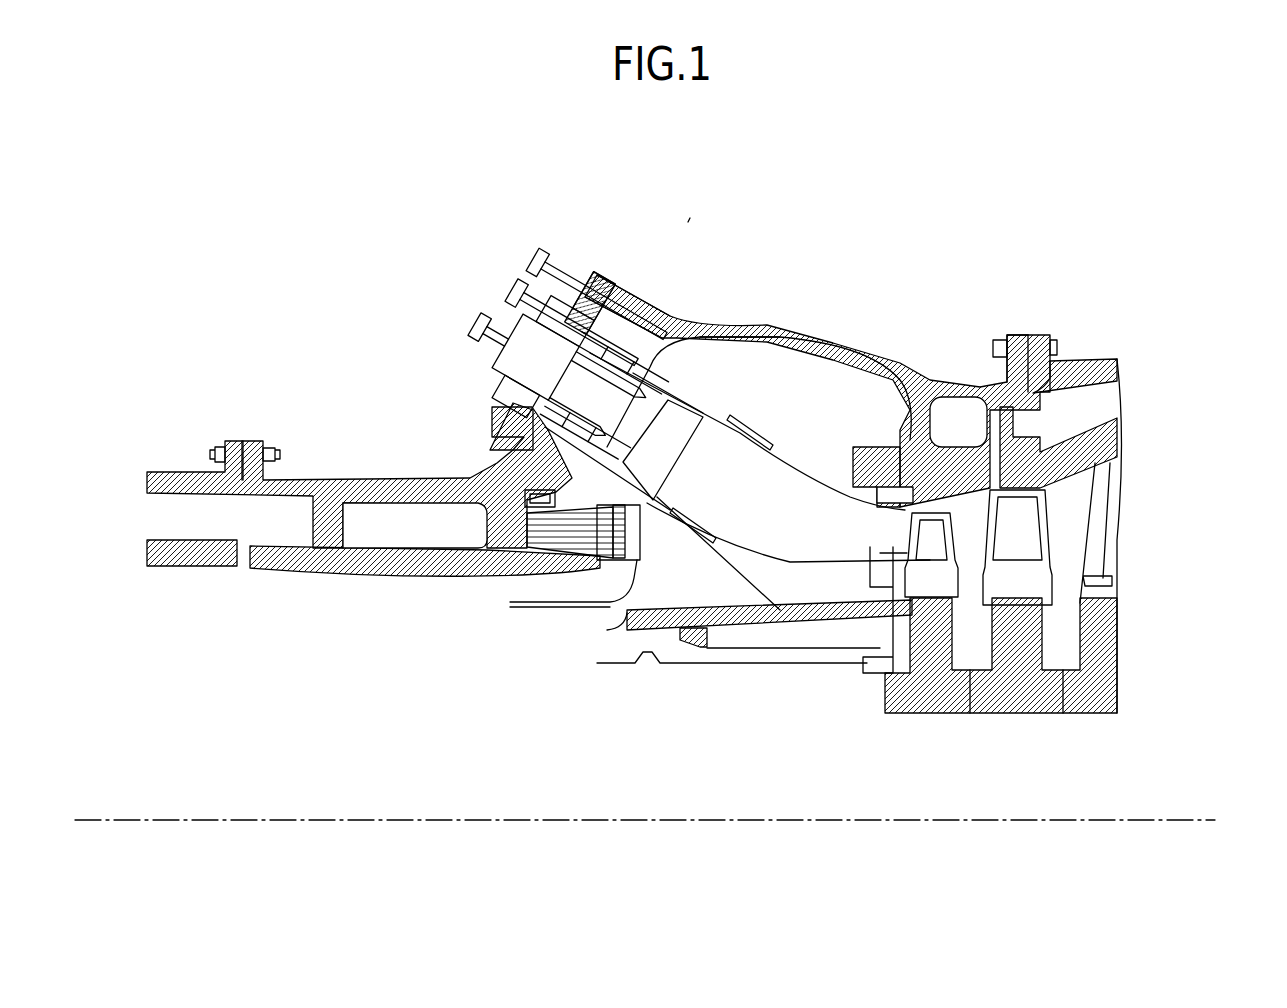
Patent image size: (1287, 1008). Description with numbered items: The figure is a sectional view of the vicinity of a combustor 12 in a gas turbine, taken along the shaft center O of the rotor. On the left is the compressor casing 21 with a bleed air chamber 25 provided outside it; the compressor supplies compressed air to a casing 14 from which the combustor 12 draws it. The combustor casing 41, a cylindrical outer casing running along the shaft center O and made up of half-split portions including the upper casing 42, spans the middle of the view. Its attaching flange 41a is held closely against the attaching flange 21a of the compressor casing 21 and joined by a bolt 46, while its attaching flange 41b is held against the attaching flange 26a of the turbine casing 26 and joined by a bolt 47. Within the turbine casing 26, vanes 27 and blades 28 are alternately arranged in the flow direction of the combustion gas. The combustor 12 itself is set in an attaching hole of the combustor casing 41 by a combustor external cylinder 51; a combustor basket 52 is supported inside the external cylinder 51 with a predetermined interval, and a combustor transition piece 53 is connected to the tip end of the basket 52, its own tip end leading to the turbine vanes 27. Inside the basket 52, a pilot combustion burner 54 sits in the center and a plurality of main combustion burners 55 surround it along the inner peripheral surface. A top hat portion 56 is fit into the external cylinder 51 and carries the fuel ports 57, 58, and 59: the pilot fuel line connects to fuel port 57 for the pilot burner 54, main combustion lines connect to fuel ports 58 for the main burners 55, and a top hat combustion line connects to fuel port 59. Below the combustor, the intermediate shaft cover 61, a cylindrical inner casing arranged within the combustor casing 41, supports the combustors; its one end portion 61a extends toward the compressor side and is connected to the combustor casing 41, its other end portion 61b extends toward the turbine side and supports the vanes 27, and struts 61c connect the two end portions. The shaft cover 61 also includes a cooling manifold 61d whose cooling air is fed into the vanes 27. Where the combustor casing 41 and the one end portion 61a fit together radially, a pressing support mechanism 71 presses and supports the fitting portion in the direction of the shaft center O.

The combustor 12 is at (690, 220).
The casing 14 is at (840, 377).
The compressor casing 21 is at (155, 478).
The attaching flange 21a is at (232, 441).
The bleed air chamber 25 is at (375, 520).
The turbine casing 26 is at (1082, 363).
The attaching flange 26a is at (1032, 335).
The vane 27 is at (1075, 508).
The blade 28 is at (990, 545).
The combustor casing 41 is at (783, 322).
The attaching flange 41a is at (252, 441).
The attaching flange 41b is at (1018, 338).
The upper casing 42 is at (665, 333).
The bolt 46 is at (215, 452).
The bolt 47 is at (1056, 345).
The combustor external cylinder 51 is at (598, 270).
The combustor basket 52 is at (700, 392).
The combustor transition piece 53 is at (792, 487).
The pilot combustion burner 54 is at (628, 395).
The main combustion burner 55 is at (588, 298).
The top hat portion 56 is at (490, 372).
The fuel port 57 is at (480, 325).
The fuel port 58 is at (515, 290).
The fuel port 59 is at (535, 260).
The intermediate shaft cover 61 is at (530, 540).
The one end portion 61a is at (500, 548).
The other end portion 61b is at (880, 560).
The strut 61c is at (683, 600).
The cooling manifold 61d is at (619, 535).
The pressing support mechanism 71 is at (548, 508).
The shaft center O is at (684, 821).